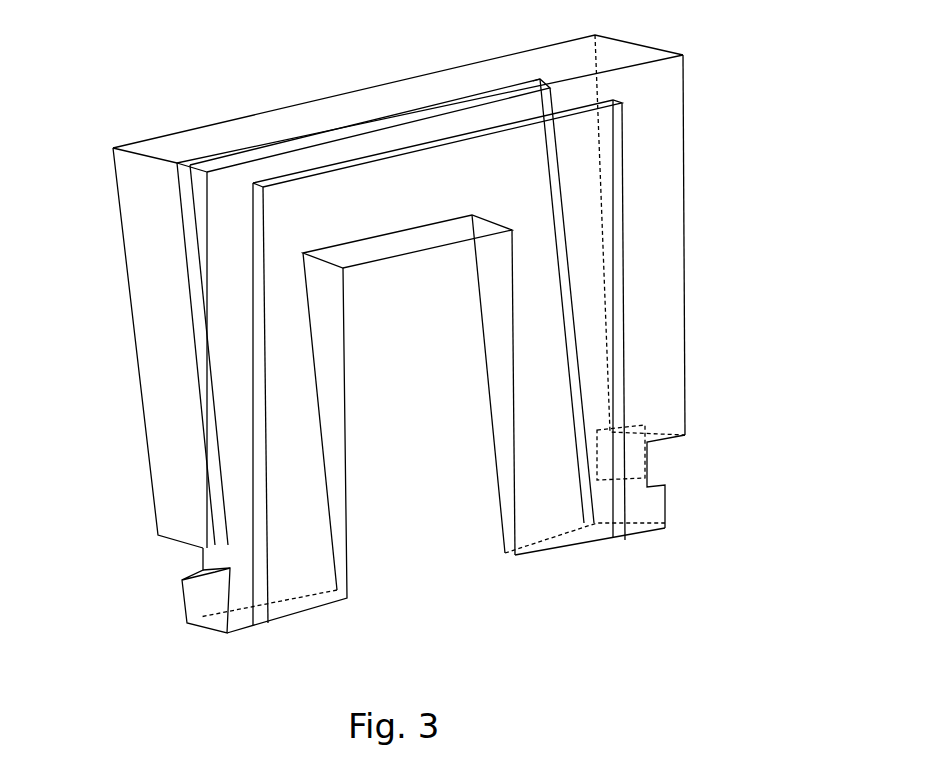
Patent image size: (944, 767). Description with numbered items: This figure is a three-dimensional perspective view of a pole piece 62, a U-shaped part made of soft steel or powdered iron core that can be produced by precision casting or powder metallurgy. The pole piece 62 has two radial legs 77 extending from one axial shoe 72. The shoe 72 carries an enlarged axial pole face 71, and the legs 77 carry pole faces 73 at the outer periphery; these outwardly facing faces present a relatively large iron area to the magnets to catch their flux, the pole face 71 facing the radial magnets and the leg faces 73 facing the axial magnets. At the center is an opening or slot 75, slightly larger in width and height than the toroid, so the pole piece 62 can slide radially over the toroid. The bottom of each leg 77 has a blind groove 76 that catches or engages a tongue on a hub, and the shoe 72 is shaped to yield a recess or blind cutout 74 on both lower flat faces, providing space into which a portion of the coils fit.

The pole piece 62 is at (251, 82).
The pole face of the shoe 71 is at (363, 107).
The axial shoe 72 is at (415, 130).
The pole faces of the legs 73 is at (140, 298).
The blind cutout 74 is at (588, 540).
The opening or slot 75 is at (433, 552).
The blind grooves 76 is at (168, 568).
The legs 77 is at (220, 443).